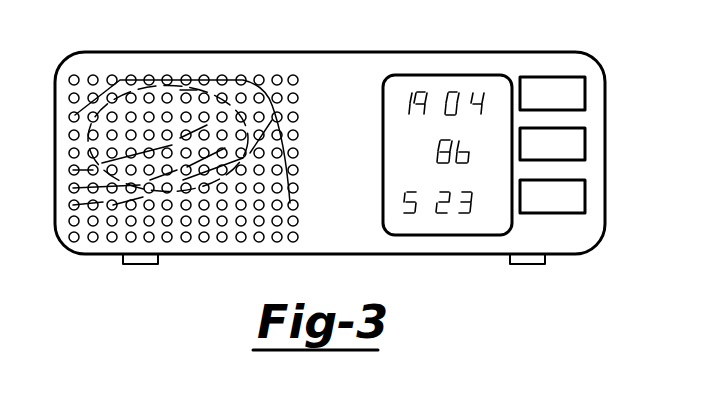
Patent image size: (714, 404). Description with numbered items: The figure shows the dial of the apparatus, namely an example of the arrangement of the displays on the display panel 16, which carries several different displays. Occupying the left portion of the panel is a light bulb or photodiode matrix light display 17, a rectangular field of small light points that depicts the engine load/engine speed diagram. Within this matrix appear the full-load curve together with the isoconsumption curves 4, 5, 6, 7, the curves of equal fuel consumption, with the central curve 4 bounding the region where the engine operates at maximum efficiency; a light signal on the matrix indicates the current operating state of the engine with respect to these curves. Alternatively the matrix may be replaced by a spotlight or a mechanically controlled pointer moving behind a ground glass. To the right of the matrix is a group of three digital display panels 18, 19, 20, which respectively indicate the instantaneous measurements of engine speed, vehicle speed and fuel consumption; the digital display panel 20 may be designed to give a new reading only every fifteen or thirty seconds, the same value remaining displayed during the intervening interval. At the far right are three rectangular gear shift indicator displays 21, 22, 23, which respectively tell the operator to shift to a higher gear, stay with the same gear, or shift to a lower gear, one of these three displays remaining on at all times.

The isoconsumption curve 4 is at (150, 113).
The isoconsumption curve 5 is at (208, 120).
The isoconsumption curve 6 is at (240, 80).
The isoconsumption curve 7 is at (104, 92).
The display panel 16 is at (366, 12).
The matrix light display 17 is at (178, 247).
The digital display panel 18 is at (472, 84).
The digital display panel 19 is at (480, 147).
The digital display panel 20 is at (403, 202).
The gear shift indicator display 21 is at (543, 83).
The gear shift indicator display 22 is at (578, 138).
The gear shift indicator display 23 is at (578, 188).